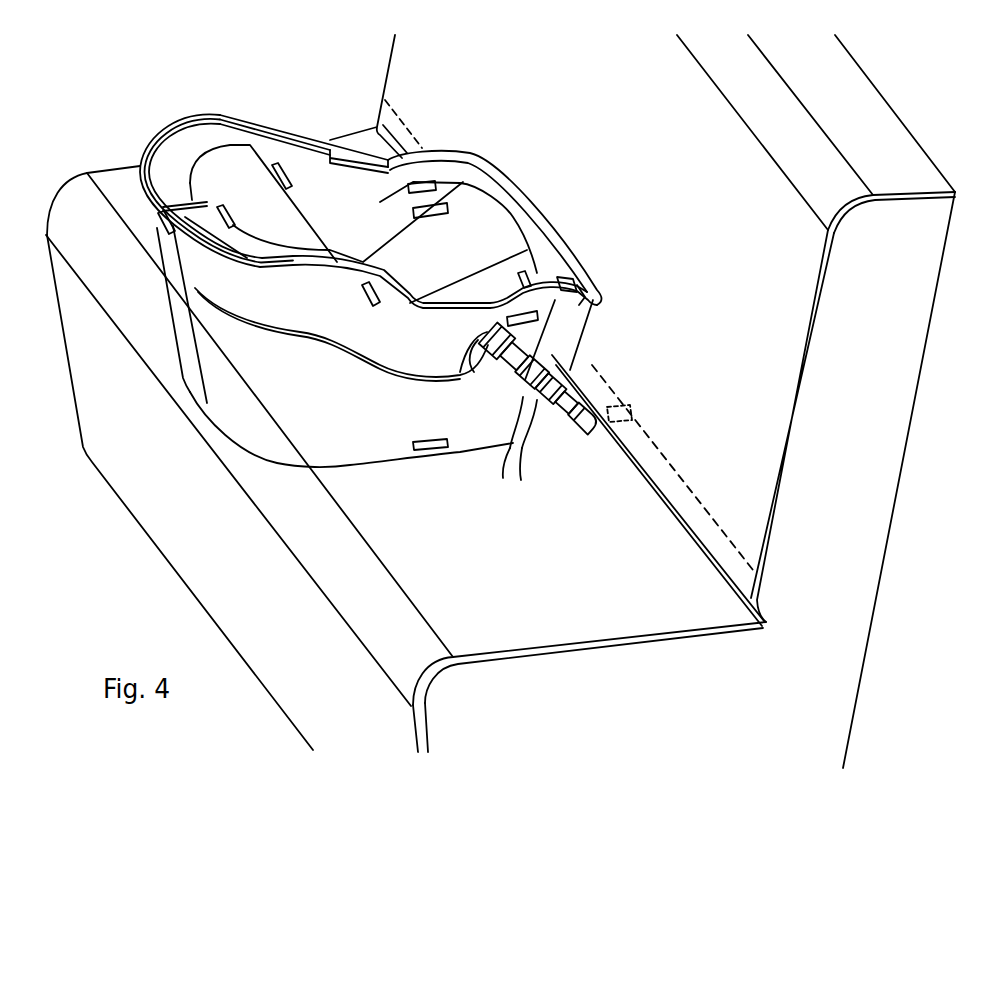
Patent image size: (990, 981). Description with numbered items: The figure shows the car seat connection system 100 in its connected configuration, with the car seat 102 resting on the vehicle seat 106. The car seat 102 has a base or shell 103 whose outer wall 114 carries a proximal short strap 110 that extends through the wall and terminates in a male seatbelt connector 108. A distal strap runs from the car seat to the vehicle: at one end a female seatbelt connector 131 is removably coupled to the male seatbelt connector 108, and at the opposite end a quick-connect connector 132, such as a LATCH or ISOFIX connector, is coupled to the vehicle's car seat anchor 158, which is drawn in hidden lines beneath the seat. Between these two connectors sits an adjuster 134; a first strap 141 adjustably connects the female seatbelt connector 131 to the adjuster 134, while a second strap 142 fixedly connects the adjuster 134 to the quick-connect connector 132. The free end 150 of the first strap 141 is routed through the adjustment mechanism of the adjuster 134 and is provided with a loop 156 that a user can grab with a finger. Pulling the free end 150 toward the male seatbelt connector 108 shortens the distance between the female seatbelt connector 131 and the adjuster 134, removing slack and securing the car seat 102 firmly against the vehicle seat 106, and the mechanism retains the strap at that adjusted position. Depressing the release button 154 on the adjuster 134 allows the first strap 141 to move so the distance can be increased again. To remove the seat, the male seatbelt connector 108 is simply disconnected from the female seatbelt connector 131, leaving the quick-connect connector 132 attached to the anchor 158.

The car seat connection system 100 is at (184, 98).
The car seat 102 is at (247, 116).
The base or shell 103 is at (223, 390).
The vehicle seat 106 is at (560, 589).
The seat connector 108 is at (582, 299).
The proximal short strap 110 is at (485, 332).
The outer wall 114 is at (337, 315).
The first connector 131 is at (560, 358).
The second connector 132 is at (597, 428).
The adjuster 134 is at (583, 388).
The first strap 141 is at (533, 388).
The second strap 142 is at (565, 420).
The free end 150 is at (533, 437).
The release button 154 is at (572, 373).
The loop 156 is at (521, 480).
The car seat anchor 158 is at (633, 414).